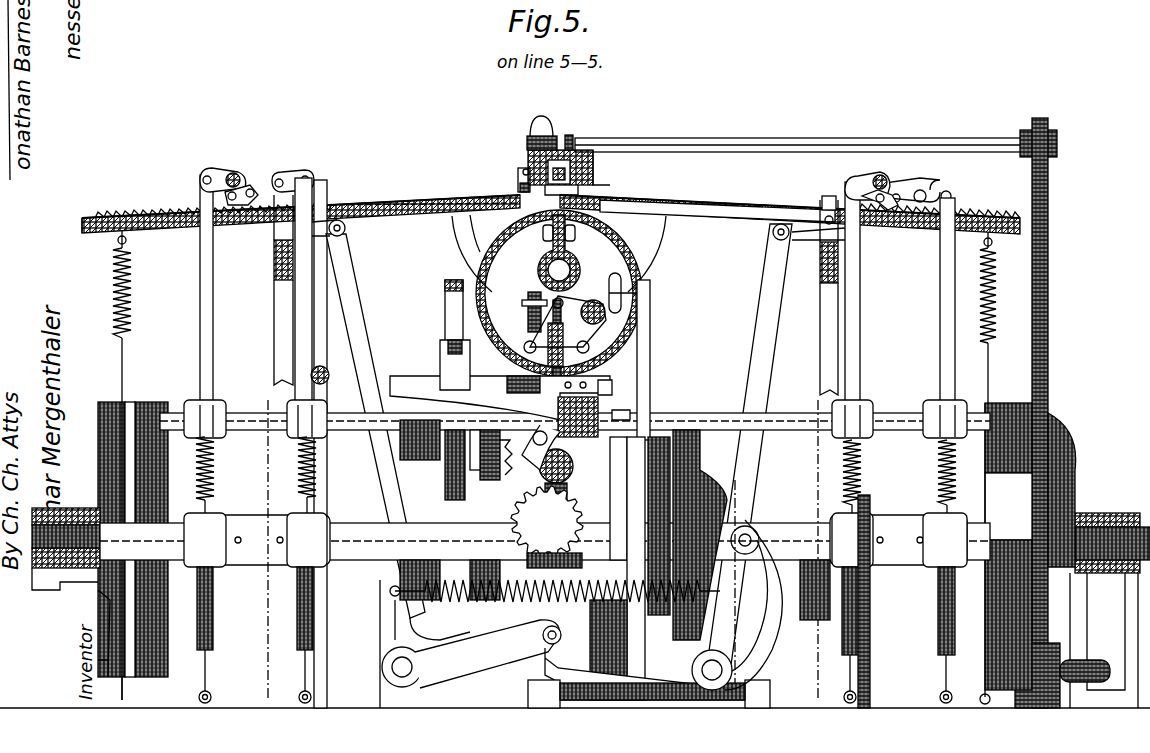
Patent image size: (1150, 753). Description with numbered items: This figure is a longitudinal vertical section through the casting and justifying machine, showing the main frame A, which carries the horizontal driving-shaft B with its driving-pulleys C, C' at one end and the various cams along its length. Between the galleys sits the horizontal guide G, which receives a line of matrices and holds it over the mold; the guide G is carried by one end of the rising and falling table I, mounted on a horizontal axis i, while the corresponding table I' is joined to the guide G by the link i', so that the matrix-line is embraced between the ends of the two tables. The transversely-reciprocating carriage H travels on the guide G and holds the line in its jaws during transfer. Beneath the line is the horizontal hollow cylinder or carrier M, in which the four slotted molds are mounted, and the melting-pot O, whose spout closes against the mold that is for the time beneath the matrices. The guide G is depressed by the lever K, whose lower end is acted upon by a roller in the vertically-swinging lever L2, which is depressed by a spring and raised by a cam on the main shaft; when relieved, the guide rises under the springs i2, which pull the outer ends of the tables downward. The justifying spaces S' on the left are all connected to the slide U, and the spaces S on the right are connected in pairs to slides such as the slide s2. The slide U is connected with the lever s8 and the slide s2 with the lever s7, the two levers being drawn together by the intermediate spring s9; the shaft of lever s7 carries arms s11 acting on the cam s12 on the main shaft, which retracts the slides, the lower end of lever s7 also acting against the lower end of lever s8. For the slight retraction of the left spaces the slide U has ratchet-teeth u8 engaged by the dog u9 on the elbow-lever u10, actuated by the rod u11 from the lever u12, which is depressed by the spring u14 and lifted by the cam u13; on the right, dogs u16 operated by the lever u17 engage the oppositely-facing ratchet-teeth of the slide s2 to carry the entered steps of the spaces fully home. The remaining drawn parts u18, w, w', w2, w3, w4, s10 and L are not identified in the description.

The lever K is at (541, 120).
The horizontal guide G is at (580, 160).
The transversely-reciprocating carriage H is at (596, 172).
The link i' is at (511, 176).
The spaces on the left side S' is at (301, 200).
The spaces on the right side S is at (790, 199).
The table I' is at (455, 254).
The rising and falling table I is at (671, 254).
The melting-pot O is at (462, 240).
The mold-carrying cylinder M is at (615, 250).
The slide U is at (160, 214).
The ratchet-teeth u8 is at (118, 213).
The dog u9 is at (250, 184).
The elbow-lever u10 is at (218, 168).
The rod u11 is at (214, 292).
The lever u12 is at (224, 405).
The cam u13 is at (216, 602).
The spring u14 is at (216, 478).
The dogs u16 is at (848, 190).
The lever u17 is at (886, 188).
The vertical rod u18 is at (862, 316).
The pawl lever w is at (611, 174).
The hatched bar w' is at (604, 295).
The bearing block w2 is at (287, 430).
The toothed rod w3 is at (314, 608).
The spring w4 is at (297, 490).
The horizontal axis i is at (819, 200).
The springs i2 is at (112, 300).
The slide s2 is at (978, 212).
The lever s7 is at (754, 330).
The lever s8 is at (366, 348).
The spring s9 is at (535, 605).
The lever arm s10 is at (545, 660).
The arms s11 is at (780, 604).
The cam s12 is at (715, 497).
The driving-pulley C is at (98, 551).
The driving-pulley C' is at (133, 539).
The main frame A is at (68, 500).
The horizontal driving-shaft B is at (350, 560).
The sleeve L is at (476, 462).
The vertically-swinging lever L2 is at (470, 430).